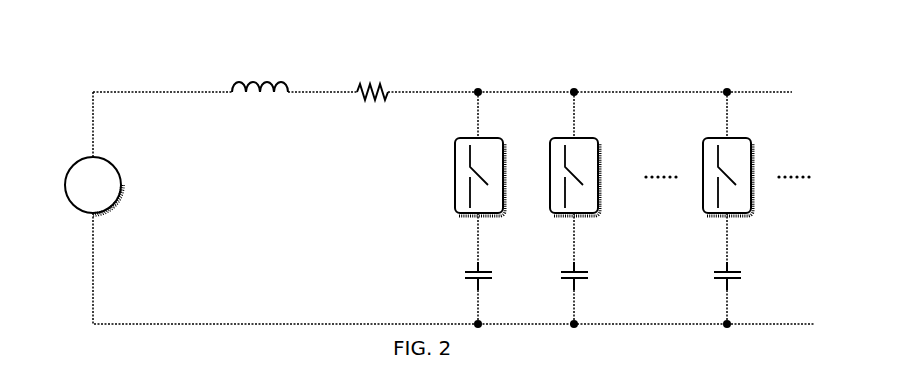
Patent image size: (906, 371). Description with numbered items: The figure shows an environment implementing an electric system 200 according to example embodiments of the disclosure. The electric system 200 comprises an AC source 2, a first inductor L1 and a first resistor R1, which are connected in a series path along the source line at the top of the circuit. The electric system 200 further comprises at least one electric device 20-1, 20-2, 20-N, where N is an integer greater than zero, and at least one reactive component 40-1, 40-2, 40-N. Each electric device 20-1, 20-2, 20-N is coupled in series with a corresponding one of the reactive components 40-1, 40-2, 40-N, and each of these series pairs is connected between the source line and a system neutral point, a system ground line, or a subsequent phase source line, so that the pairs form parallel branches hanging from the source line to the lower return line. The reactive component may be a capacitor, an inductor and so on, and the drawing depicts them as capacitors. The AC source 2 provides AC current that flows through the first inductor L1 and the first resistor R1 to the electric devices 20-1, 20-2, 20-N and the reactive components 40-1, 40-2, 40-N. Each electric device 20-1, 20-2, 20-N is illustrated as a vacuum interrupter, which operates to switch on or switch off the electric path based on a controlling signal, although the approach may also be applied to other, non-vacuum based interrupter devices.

The electric system 200 is at (92, 36).
The AC source 2 is at (66, 178).
The first inductor L1 is at (238, 72).
The first resistor R1 is at (358, 85).
The electric device 20-1 is at (458, 140).
The electric device 20-2 is at (556, 140).
The electric device 20-N is at (706, 140).
The reactive component 40-1 is at (468, 272).
The reactive component 40-2 is at (564, 272).
The reactive component 40-N is at (716, 272).